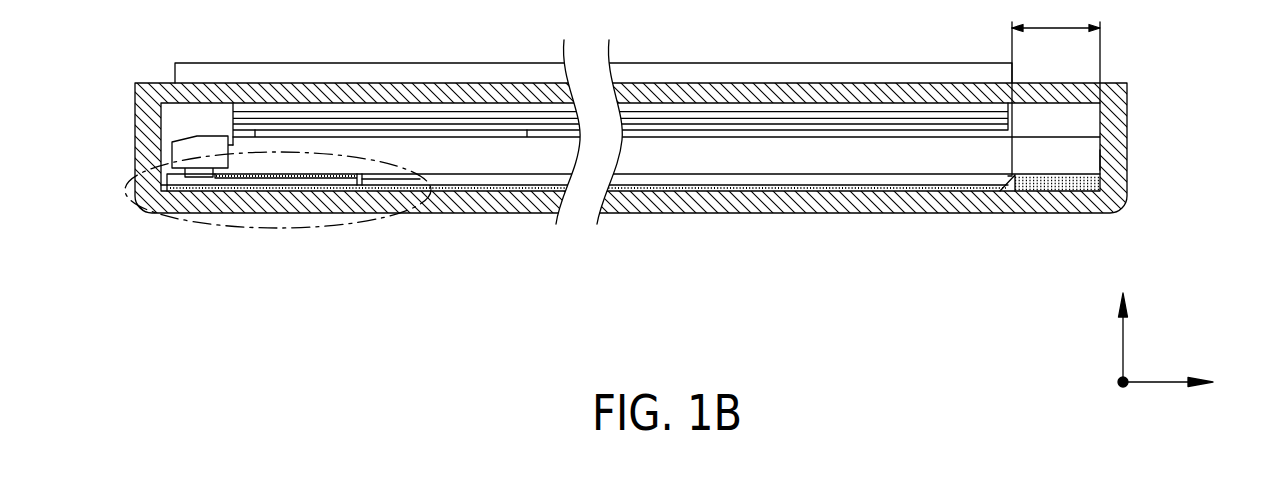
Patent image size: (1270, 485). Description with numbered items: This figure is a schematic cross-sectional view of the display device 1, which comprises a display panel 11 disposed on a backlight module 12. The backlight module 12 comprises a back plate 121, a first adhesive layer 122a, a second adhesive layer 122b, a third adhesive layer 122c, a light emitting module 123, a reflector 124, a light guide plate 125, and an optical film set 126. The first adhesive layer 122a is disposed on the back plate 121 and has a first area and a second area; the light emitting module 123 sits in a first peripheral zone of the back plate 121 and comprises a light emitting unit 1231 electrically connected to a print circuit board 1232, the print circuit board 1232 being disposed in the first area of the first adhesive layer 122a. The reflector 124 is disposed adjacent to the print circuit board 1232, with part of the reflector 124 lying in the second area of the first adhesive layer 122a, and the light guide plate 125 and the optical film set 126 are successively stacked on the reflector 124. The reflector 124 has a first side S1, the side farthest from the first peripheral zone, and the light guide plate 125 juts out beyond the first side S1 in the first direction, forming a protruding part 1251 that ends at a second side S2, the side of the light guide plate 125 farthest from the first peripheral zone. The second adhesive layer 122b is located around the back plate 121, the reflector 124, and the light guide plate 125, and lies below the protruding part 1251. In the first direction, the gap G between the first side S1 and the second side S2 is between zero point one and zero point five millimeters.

The display device 1 is at (100, 43).
The display panel 11 is at (835, 93).
The backlight module 12 is at (165, 318).
The back plate 121 is at (673, 207).
The first adhesive layer 122a is at (173, 198).
The second adhesive layer 122b is at (1045, 191).
The third adhesive layer 122c is at (340, 182).
The light emitting module 123 is at (267, 228).
The light emitting unit 1231 is at (220, 158).
The print circuit board 1232 is at (288, 226).
The reflector 124 is at (755, 180).
The light guide plate 125 is at (843, 153).
The optical film set 126 is at (905, 117).
The protruding part 1251 is at (1090, 148).
The first side S1 is at (1010, 177).
The second side S2 is at (1103, 160).
The gap G is at (1056, 51).